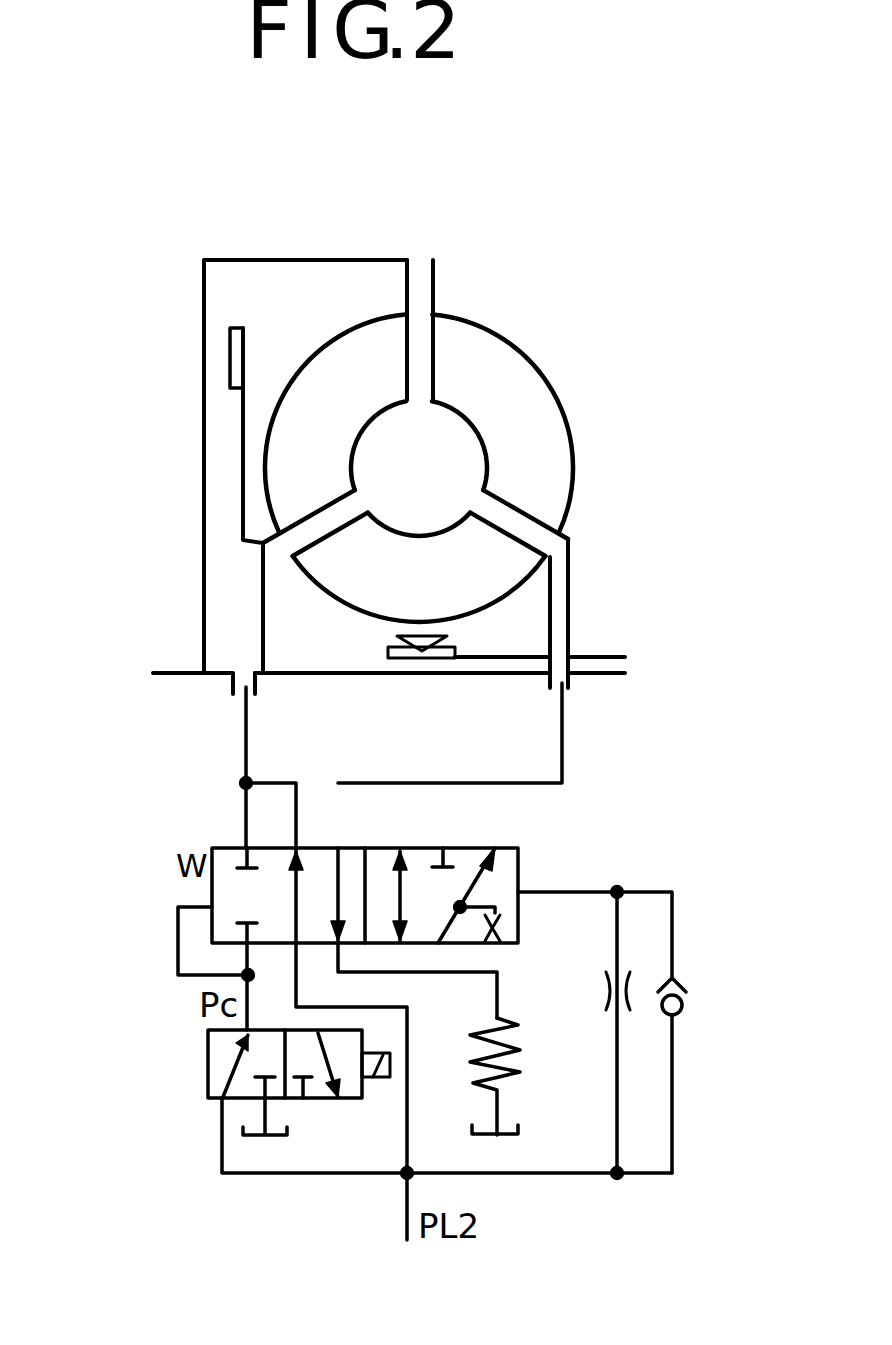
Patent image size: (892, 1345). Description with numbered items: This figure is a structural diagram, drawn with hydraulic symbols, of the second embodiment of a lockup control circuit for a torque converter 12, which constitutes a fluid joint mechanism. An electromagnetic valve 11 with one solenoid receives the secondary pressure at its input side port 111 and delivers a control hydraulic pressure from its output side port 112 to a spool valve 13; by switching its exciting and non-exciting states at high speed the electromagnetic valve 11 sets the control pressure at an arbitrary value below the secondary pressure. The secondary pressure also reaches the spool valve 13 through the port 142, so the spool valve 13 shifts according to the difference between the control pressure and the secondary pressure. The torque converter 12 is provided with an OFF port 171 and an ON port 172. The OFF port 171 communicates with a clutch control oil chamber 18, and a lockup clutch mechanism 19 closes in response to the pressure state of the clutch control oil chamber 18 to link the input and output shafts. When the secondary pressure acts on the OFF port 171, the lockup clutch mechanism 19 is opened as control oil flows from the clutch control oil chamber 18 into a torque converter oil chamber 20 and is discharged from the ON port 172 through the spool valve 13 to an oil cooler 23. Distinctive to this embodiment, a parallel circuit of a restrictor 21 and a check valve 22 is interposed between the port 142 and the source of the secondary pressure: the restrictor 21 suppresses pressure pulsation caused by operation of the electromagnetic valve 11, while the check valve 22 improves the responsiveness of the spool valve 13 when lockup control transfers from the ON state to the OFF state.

The electromagnetic valve 11 is at (208, 1070).
The torque converter 12 is at (575, 453).
The spool valve 13 is at (488, 843).
The clutch control oil chamber 18 is at (217, 450).
The lockup clutch mechanism 19 is at (230, 360).
The torque converter oil chamber 20 is at (402, 270).
The restrictor 21 is at (603, 990).
The check valve 22 is at (693, 1007).
The oil cooler 23 is at (515, 1075).
The input side port 111 is at (222, 1137).
The output side port 112 is at (243, 980).
The port 142 is at (522, 888).
The OFF port 171 is at (228, 695).
The ON port 172 is at (573, 683).